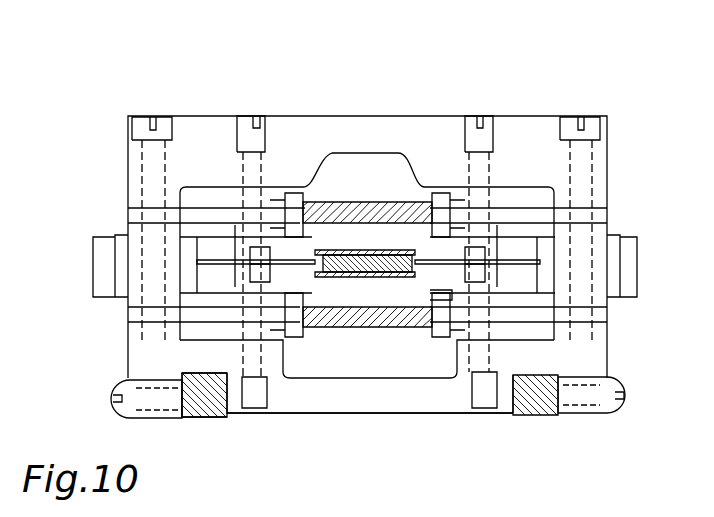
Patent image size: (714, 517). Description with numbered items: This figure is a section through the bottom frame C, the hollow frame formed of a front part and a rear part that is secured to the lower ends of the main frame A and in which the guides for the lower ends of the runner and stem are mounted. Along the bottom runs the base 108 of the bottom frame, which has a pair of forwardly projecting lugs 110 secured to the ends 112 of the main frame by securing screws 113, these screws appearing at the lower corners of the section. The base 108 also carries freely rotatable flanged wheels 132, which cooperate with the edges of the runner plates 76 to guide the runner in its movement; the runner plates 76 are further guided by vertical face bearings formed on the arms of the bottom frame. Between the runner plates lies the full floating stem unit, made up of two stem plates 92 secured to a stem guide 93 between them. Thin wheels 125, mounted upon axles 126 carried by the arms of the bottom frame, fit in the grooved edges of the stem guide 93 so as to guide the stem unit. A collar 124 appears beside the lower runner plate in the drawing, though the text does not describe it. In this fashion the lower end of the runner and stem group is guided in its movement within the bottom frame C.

The bottom frame C is at (412, 128).
The runner plates 76 is at (386, 214).
The flanged wheels 132 is at (303, 192).
The stem plates 92 is at (352, 266).
The stem guide 93 is at (382, 266).
The thin wheels 125 is at (368, 252).
The axles 126 is at (252, 281).
The collar 124 is at (432, 292).
The main frame A is at (210, 413).
The ends of the main frame 112 is at (530, 418).
The base 108 is at (390, 416).
The lugs 110 is at (590, 416).
The securing screws 113 is at (618, 400).